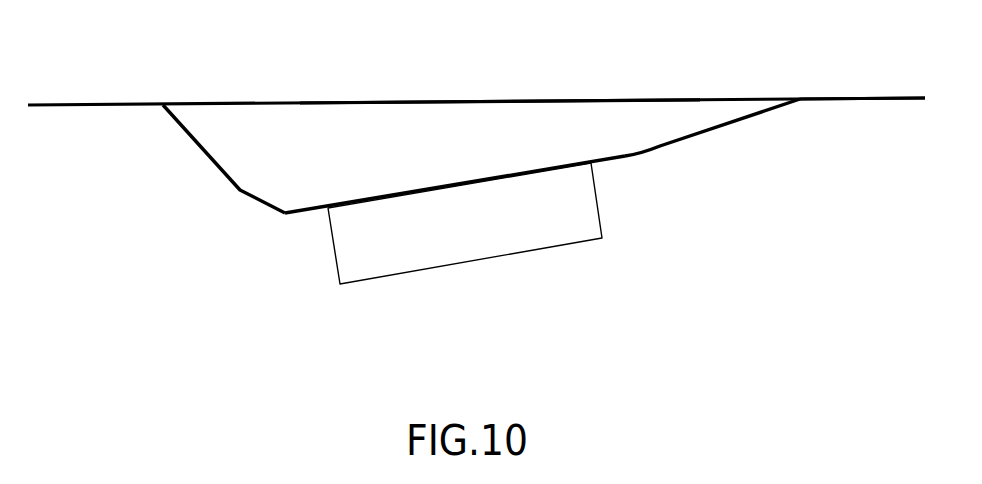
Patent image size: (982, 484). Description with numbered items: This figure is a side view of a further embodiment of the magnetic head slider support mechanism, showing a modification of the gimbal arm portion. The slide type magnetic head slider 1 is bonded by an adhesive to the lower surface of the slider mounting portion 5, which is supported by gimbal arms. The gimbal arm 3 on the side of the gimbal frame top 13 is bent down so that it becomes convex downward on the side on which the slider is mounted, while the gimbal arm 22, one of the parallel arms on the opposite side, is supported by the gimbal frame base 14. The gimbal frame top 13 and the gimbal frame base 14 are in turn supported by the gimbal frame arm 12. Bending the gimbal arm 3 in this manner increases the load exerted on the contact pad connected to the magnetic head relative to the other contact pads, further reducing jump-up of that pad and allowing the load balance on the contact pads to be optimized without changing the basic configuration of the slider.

The slide type magnetic head slider 1 is at (471, 246).
The gimbal arm 3 is at (196, 147).
The slider mounting portion 5 is at (416, 190).
The gimbal frame arm 12 is at (492, 102).
The gimbal frame top 13 is at (97, 103).
The gimbal frame base 14 is at (867, 96).
The gimbal arm 22 is at (709, 133).